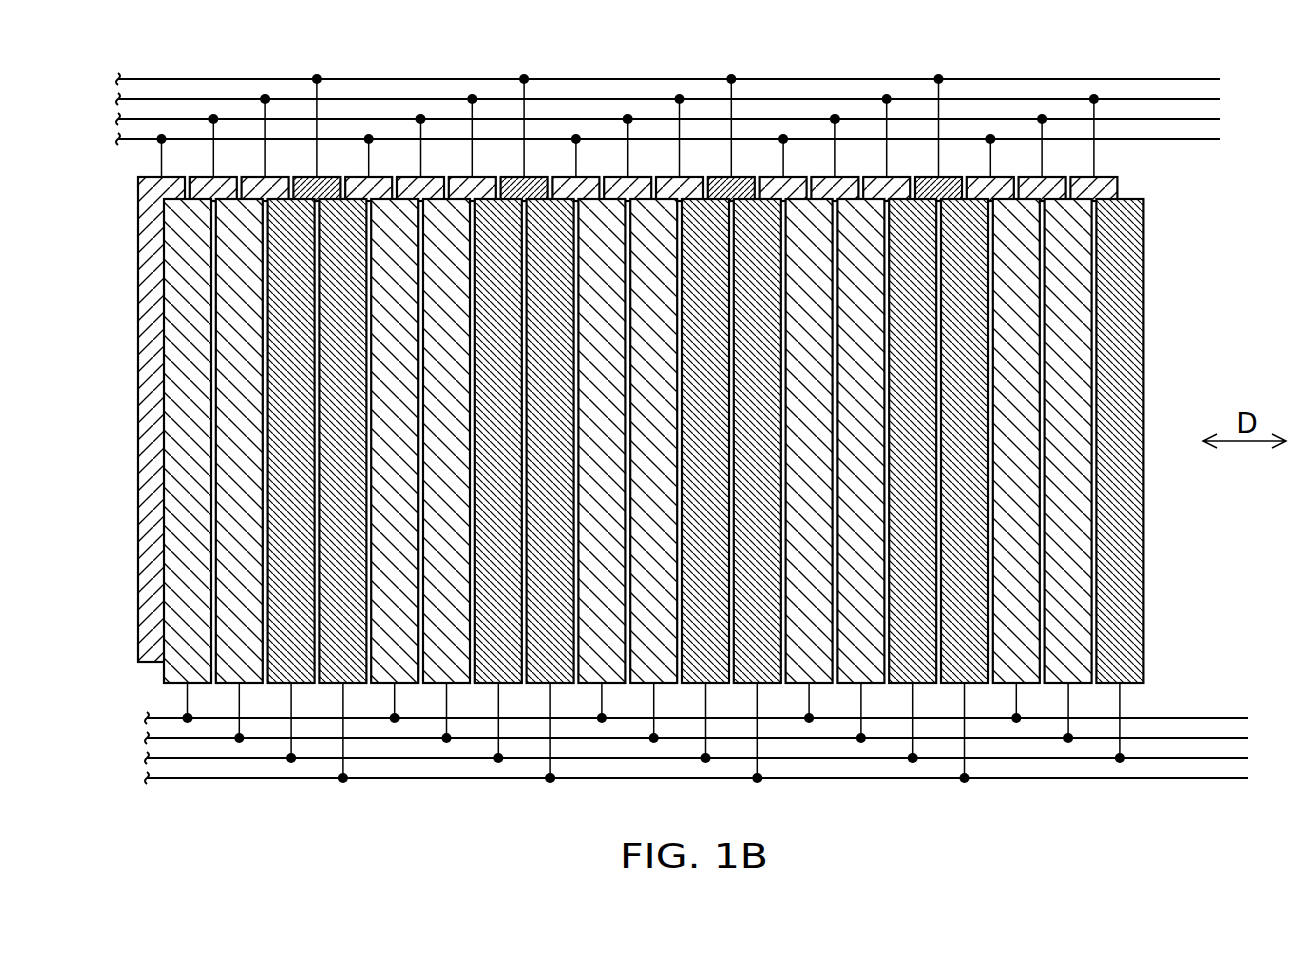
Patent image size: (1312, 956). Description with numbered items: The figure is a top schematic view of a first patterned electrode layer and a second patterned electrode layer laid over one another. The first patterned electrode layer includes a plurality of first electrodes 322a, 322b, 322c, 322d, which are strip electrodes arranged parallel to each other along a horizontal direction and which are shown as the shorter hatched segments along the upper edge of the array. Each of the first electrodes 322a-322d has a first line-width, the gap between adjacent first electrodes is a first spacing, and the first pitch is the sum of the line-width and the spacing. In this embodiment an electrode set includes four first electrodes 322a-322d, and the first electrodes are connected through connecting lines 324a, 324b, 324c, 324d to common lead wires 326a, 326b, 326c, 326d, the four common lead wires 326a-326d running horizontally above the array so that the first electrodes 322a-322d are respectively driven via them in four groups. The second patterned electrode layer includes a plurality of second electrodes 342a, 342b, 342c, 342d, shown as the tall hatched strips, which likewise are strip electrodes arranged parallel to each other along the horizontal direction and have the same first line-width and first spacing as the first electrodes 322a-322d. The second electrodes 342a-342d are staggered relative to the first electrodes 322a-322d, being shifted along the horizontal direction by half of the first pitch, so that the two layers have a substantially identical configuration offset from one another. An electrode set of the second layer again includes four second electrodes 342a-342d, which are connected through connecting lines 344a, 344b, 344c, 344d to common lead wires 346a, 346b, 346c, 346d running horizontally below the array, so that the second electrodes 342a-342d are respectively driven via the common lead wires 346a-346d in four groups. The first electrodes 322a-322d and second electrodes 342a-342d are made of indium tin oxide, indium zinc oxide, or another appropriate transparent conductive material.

The first electrode 322a is at (177, 183).
The first electrode 322b is at (228, 183).
The first electrode 322c is at (283, 183).
The first electrode 322d is at (333, 183).
The connecting line 324a is at (575, 163).
The connecting line 324b is at (627, 163).
The connecting line 324c is at (679, 163).
The connecting line 324d is at (731, 163).
The common lead wire 326a is at (1210, 139).
The common lead wire 326b is at (1210, 119).
The common lead wire 326c is at (1210, 99).
The common lead wire 326d is at (1210, 79).
The second electrode 342a is at (198, 673).
The second electrode 342b is at (250, 673).
The second electrode 342c is at (307, 673).
The second electrode 342d is at (357, 673).
The connecting line 344a is at (601, 700).
The connecting line 344b is at (653, 700).
The connecting line 344c is at (705, 700).
The connecting line 344d is at (757, 700).
The common lead wire 346a is at (1238, 718).
The common lead wire 346b is at (1238, 738).
The common lead wire 346c is at (1238, 758).
The common lead wire 346d is at (1238, 778).